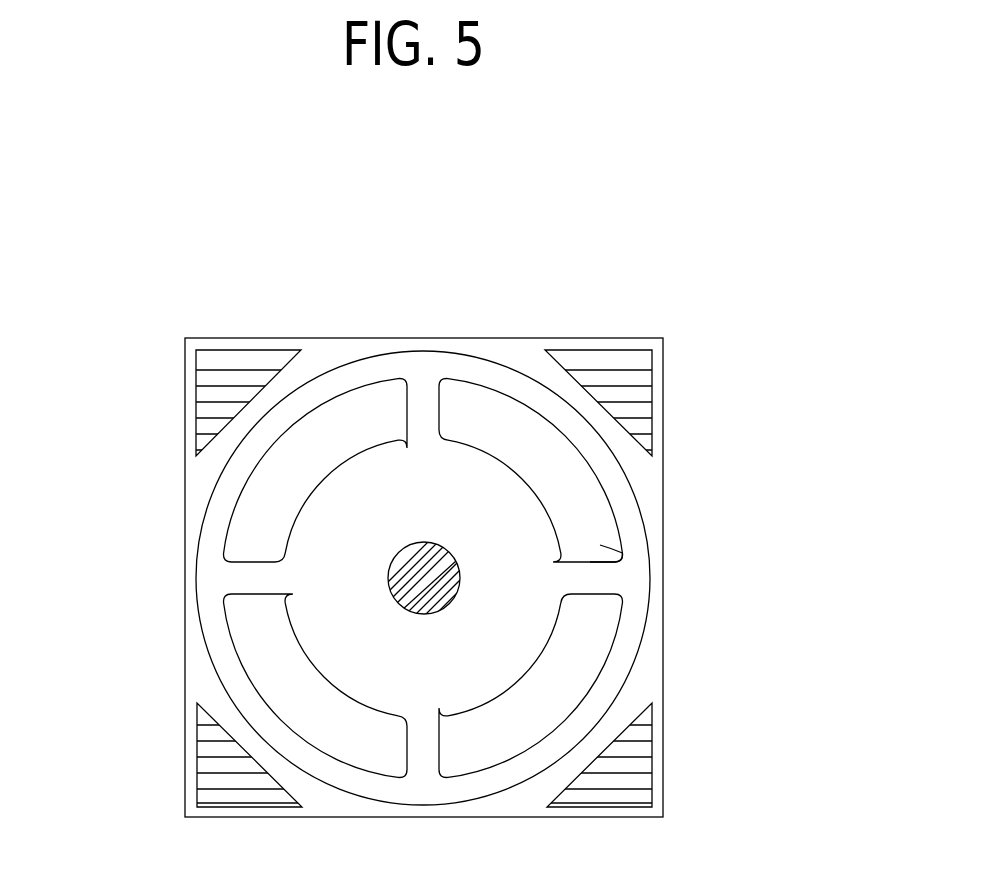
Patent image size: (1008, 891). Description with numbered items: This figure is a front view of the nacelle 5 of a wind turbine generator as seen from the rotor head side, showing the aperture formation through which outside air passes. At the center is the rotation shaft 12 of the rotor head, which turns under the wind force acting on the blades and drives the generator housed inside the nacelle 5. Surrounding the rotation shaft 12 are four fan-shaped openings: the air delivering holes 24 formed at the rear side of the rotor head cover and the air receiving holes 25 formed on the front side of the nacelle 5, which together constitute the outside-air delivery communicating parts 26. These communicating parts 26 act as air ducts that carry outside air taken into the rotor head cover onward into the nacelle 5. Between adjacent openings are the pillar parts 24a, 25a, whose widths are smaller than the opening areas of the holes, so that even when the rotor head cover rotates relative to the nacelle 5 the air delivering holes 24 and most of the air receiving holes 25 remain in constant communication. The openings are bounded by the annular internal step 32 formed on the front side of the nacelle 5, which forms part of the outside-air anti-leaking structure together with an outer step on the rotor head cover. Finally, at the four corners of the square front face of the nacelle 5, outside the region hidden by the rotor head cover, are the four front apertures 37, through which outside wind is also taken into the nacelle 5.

The nacelle 5 is at (350, 337).
The rotation shaft 12 is at (423, 575).
The air delivering hole 24 is at (423, 499).
The air receiving hole 25 is at (496, 384).
The pillar part 24a is at (736, 551).
The pillar part 25a is at (598, 556).
The outside-air delivery communicating part 26 is at (567, 224).
The internal step 32 is at (211, 494).
The front aperture 37 is at (208, 388).